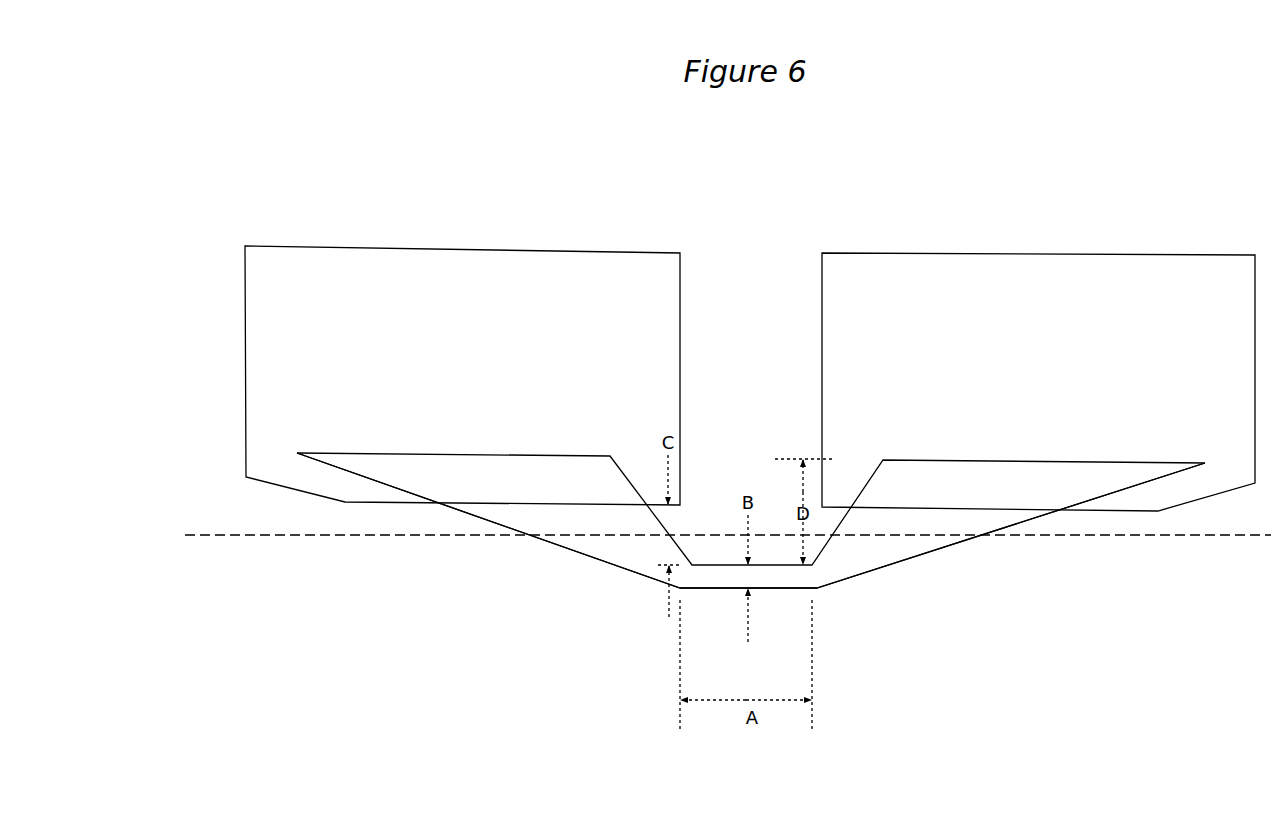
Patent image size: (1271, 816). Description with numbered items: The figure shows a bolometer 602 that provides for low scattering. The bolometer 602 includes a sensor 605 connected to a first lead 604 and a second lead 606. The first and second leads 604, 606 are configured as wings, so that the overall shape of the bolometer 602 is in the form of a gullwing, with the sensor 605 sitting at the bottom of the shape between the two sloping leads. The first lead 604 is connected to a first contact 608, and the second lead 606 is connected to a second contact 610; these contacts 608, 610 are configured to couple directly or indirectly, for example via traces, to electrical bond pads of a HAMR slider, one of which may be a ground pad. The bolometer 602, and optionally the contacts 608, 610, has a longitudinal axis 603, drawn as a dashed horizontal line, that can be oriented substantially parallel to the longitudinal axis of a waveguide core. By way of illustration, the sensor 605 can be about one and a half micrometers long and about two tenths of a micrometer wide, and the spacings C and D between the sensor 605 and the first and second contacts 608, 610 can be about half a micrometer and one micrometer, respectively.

The bolometer 602 is at (648, 638).
The longitudinal axis 603 is at (310, 536).
The first lead 604 is at (618, 550).
The sensor 605 is at (778, 578).
The second lead 606 is at (865, 553).
The first contact 608 is at (462, 375).
The second contact 610 is at (1038, 382).